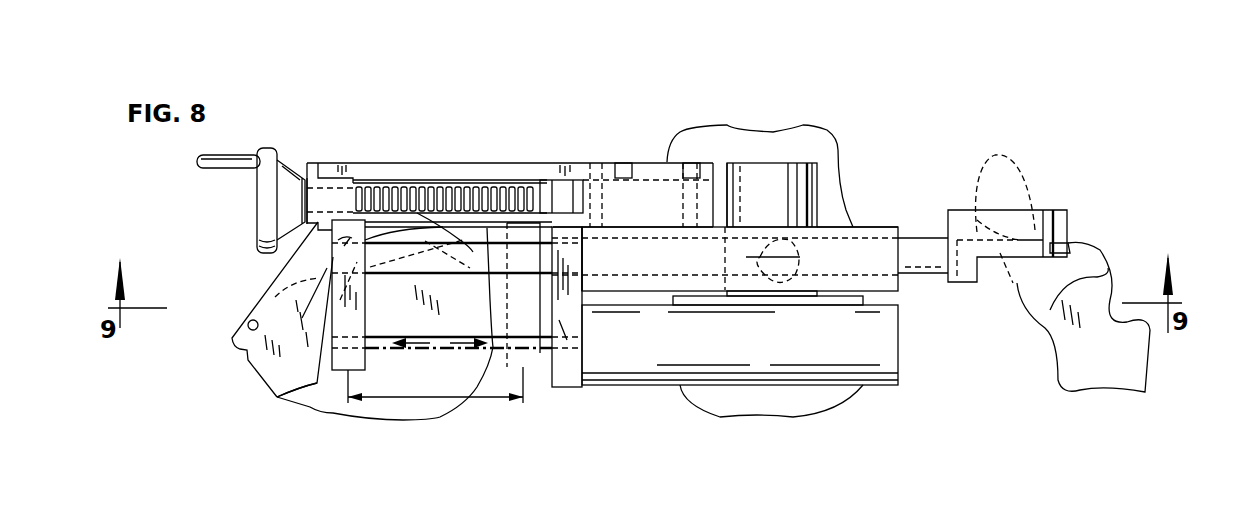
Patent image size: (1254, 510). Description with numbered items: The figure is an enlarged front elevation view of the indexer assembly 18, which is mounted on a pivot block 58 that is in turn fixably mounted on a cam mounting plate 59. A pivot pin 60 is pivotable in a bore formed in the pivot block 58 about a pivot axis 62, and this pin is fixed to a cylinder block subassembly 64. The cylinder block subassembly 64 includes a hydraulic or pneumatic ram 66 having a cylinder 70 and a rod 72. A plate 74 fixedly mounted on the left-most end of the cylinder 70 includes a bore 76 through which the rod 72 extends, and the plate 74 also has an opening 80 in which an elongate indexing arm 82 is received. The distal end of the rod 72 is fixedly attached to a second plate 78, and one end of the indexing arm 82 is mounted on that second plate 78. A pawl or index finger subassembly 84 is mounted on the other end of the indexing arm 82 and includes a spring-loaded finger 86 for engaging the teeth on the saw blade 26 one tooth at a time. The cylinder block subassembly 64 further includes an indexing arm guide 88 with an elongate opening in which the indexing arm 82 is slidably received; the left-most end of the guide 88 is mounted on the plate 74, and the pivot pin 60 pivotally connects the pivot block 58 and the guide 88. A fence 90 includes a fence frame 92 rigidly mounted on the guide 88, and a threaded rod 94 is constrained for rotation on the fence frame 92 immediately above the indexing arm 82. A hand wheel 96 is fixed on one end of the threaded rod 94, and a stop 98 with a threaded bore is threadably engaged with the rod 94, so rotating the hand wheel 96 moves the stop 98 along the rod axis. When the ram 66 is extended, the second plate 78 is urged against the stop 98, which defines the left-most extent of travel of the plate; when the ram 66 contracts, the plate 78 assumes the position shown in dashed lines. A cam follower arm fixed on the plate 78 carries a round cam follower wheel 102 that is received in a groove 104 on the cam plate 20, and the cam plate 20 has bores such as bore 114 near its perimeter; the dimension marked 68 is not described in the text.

The indexer assembly 18 is at (462, 140).
The cam plate 20 is at (232, 309).
The saw blade 26 is at (1113, 287).
The pivot block 58 is at (780, 160).
The cam mounting plate 59 is at (740, 130).
The pivot pin 60 is at (827, 225).
The pivot axis 62 is at (773, 218).
The cylinder block subassembly 64 is at (575, 404).
The ram 66 is at (886, 404).
The rod 68 is at (443, 353).
The cylinder 70 is at (890, 355).
The rod 72 is at (493, 385).
The plate 74 is at (563, 222).
The bore 76 is at (573, 330).
The second plate 78 is at (333, 413).
The opening 80 is at (600, 227).
The indexing arm 82 is at (485, 240).
The index finger subassembly 84 is at (975, 200).
The spring-loaded finger 86 is at (1083, 245).
The indexing arm guide 88 is at (838, 150).
The fence 90 is at (359, 148).
The fence frame 92 is at (480, 162).
The threaded rod 94 is at (402, 190).
The hand wheel 96 is at (268, 147).
The stop 98 is at (320, 195).
The cam follower wheel 102 is at (290, 301).
The groove 104 is at (280, 397).
The bore 114 is at (245, 350).